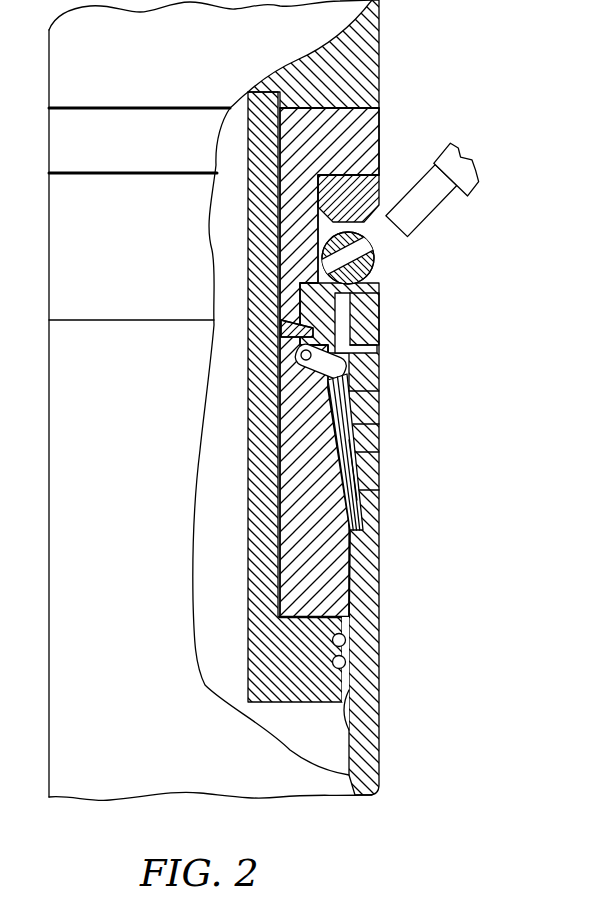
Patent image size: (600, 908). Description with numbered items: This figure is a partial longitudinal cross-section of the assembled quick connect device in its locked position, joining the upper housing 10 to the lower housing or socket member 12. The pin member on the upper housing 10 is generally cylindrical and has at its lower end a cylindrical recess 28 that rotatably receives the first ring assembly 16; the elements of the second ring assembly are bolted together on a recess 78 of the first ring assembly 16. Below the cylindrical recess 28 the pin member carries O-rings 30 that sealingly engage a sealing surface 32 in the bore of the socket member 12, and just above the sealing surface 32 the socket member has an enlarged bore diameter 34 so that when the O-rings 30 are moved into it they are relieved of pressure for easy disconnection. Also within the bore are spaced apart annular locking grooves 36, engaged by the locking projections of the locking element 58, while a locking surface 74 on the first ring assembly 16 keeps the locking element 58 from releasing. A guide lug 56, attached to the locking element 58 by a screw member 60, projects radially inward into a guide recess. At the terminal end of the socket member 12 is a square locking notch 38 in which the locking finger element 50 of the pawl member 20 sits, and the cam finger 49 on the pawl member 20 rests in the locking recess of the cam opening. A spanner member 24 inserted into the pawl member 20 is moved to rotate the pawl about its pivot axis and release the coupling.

The upper housing 10 is at (362, 52).
The first ring assembly 16 is at (380, 133).
The recess 78 is at (322, 218).
The spanner member 24 is at (440, 197).
The pawl member 20 is at (370, 286).
The locking finger element 50 is at (365, 331).
The locking notch 38 is at (370, 348).
The cam finger 49 is at (312, 324).
The screw member 60 is at (302, 357).
The guide lug 56 is at (330, 372).
The locking element 58 is at (350, 418).
The annular locking grooves 36 is at (357, 443).
The locking surface 74 is at (353, 483).
The cylindrical recess 28 is at (283, 580).
The enlarged bore diameter 34 is at (347, 612).
The O-rings 30 is at (347, 640).
The lower housing 12 is at (372, 700).
The sealing surface 32 is at (352, 735).